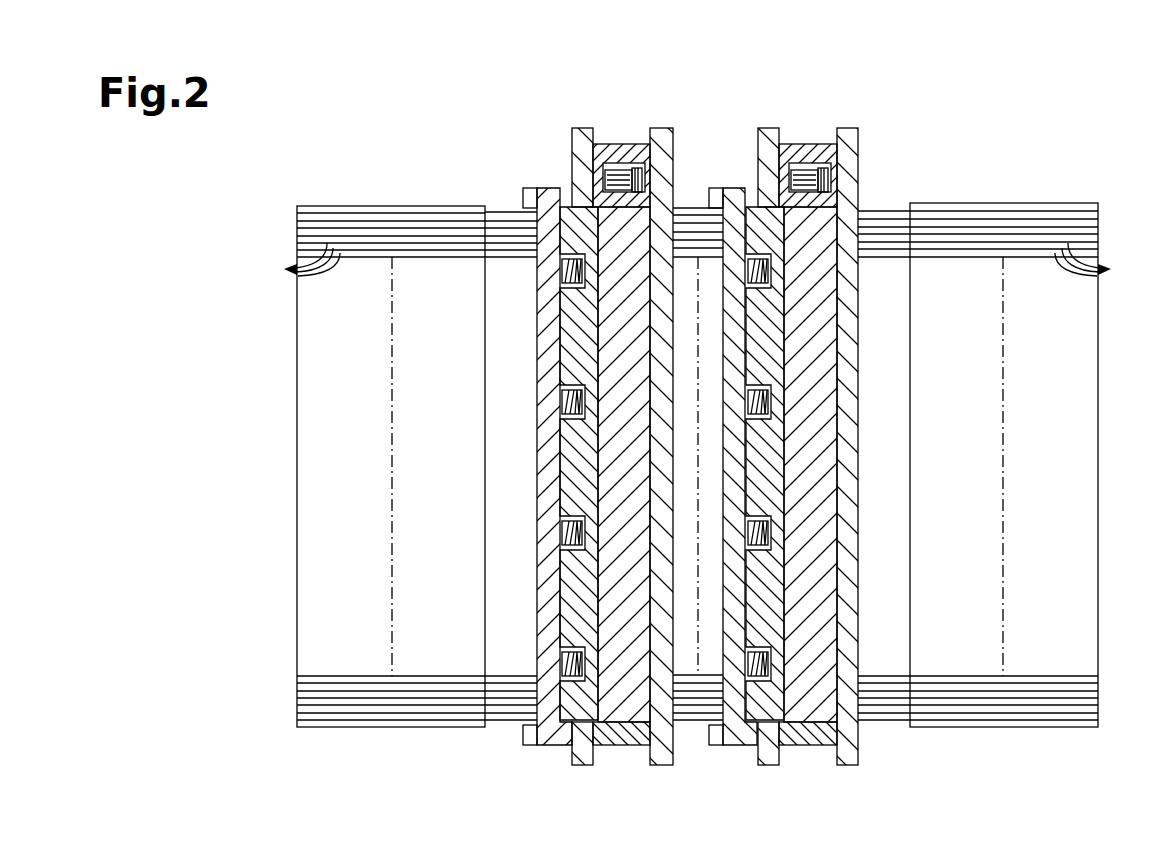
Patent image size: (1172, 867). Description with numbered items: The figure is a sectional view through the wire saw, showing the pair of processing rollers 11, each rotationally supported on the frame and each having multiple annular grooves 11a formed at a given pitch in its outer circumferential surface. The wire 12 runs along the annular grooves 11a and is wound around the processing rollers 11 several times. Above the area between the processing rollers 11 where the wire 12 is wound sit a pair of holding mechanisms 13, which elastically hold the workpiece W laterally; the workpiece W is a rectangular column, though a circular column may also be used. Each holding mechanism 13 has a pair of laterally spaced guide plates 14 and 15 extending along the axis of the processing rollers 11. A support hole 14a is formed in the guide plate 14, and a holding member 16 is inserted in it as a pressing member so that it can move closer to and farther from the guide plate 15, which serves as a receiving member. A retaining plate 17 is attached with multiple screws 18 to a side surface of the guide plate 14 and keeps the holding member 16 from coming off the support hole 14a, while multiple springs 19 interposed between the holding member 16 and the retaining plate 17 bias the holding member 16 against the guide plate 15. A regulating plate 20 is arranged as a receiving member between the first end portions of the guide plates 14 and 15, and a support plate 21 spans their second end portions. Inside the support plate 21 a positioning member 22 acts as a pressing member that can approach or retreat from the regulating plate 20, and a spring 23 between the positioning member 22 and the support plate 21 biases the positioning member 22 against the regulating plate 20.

The processing roller 11 is at (378, 206).
The annular groove 11a is at (696, 263).
The wire 12 is at (495, 212).
The holding mechanism 13 is at (695, 437).
The guide plate 14 is at (572, 141).
The support hole 14a is at (575, 746).
The guide plate 15 is at (673, 152).
The holding member 16 is at (567, 343).
The retaining plate 17 is at (547, 739).
The screw 18 is at (523, 197).
The spring 19 is at (562, 272).
The regulating plate 20 is at (615, 746).
The support plate 21 is at (618, 143).
The positioning member 22 is at (605, 173).
The spring 23 is at (640, 180).
The workpiece W is at (608, 447).